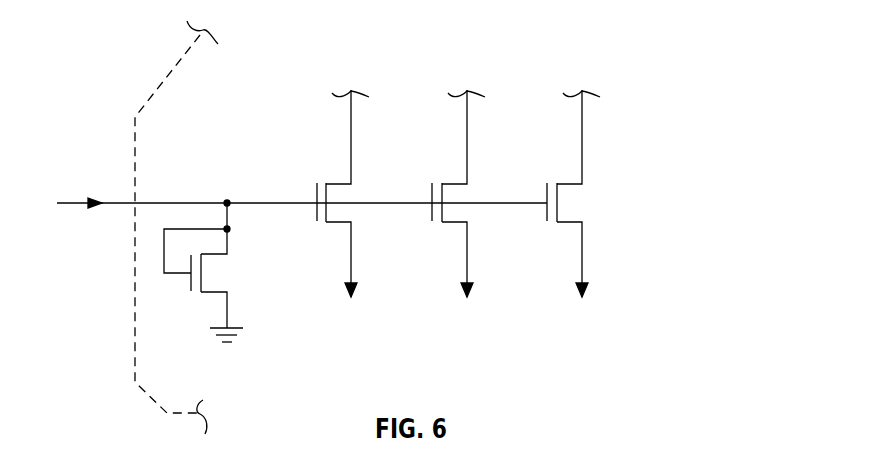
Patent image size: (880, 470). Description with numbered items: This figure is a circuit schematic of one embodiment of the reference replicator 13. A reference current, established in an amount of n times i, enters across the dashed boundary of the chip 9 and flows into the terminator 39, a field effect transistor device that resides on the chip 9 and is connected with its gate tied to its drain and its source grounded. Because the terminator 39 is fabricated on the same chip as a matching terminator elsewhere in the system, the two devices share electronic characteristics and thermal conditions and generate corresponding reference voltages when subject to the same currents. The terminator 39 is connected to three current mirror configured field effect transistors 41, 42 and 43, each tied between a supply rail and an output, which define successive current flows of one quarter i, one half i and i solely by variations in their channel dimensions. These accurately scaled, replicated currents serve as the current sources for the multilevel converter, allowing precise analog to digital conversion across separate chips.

The chip 9 is at (157, 88).
The reference replicator 13 is at (676, 270).
The terminator 39 is at (231, 276).
The current mirror configured field effect transistor 41 is at (348, 195).
The current mirror configured field effect transistor 42 is at (464, 195).
The current mirror configured field effect transistor 43 is at (579, 195).